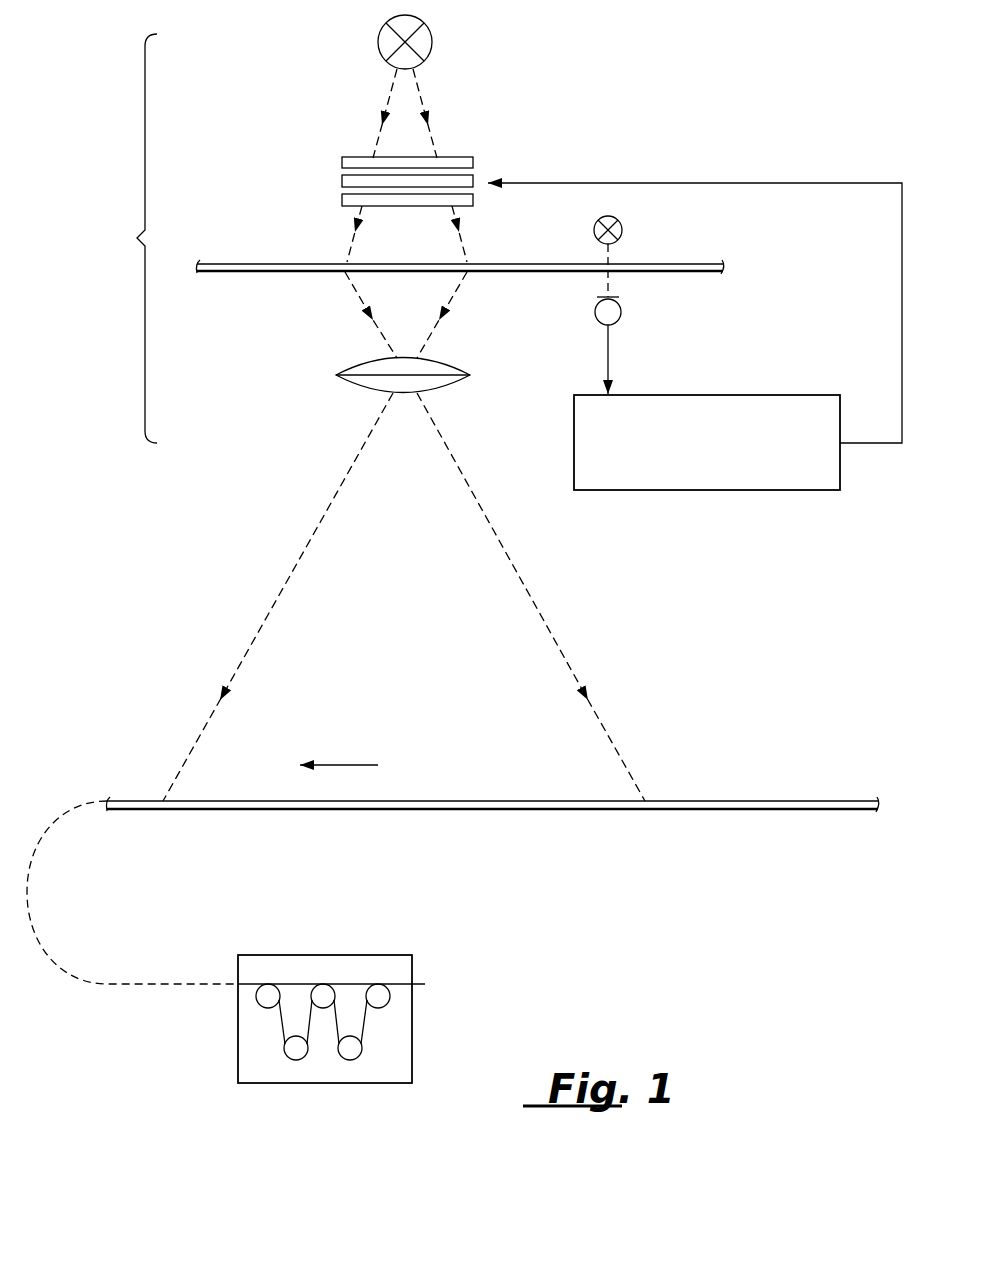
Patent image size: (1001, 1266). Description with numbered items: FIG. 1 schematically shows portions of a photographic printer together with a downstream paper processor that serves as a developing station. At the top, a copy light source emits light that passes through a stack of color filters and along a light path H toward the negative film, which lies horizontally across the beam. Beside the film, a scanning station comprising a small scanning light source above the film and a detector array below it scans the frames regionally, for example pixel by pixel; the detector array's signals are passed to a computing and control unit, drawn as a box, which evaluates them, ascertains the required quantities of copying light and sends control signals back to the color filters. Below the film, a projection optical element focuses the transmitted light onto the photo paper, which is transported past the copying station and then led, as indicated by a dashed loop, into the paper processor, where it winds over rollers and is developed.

The light path H is at (403, 232).